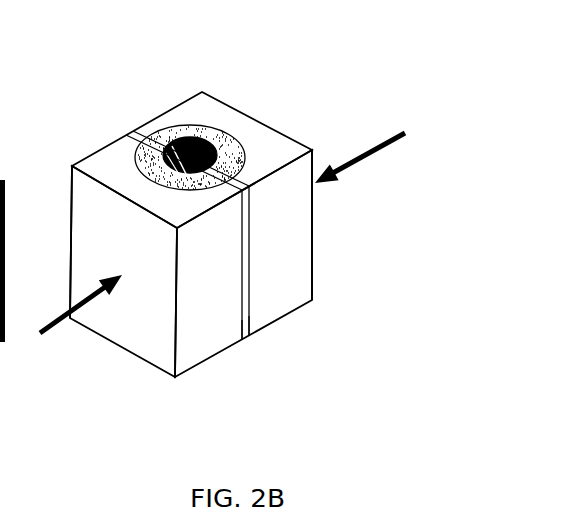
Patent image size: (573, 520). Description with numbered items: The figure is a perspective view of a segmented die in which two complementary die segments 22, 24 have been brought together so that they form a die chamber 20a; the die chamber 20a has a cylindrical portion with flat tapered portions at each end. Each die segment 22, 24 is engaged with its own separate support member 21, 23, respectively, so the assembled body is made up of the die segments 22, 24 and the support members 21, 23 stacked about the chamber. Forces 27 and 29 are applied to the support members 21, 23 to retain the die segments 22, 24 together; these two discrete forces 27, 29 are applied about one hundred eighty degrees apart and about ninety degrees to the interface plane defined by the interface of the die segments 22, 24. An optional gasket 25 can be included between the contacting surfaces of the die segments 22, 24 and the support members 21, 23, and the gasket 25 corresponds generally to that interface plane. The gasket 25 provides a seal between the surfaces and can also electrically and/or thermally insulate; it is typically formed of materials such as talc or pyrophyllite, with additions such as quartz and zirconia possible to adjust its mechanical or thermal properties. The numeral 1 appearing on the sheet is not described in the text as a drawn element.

The sheet label remnant 1 is at (17, 35).
The die chamber 20a is at (191, 143).
The support member 21 is at (143, 271).
The die segment 22 is at (147, 155).
The support member 23 is at (243, 263).
The die segment 24 is at (182, 132).
The gasket 25 is at (247, 335).
The force 27 is at (76, 325).
The force 29 is at (375, 146).